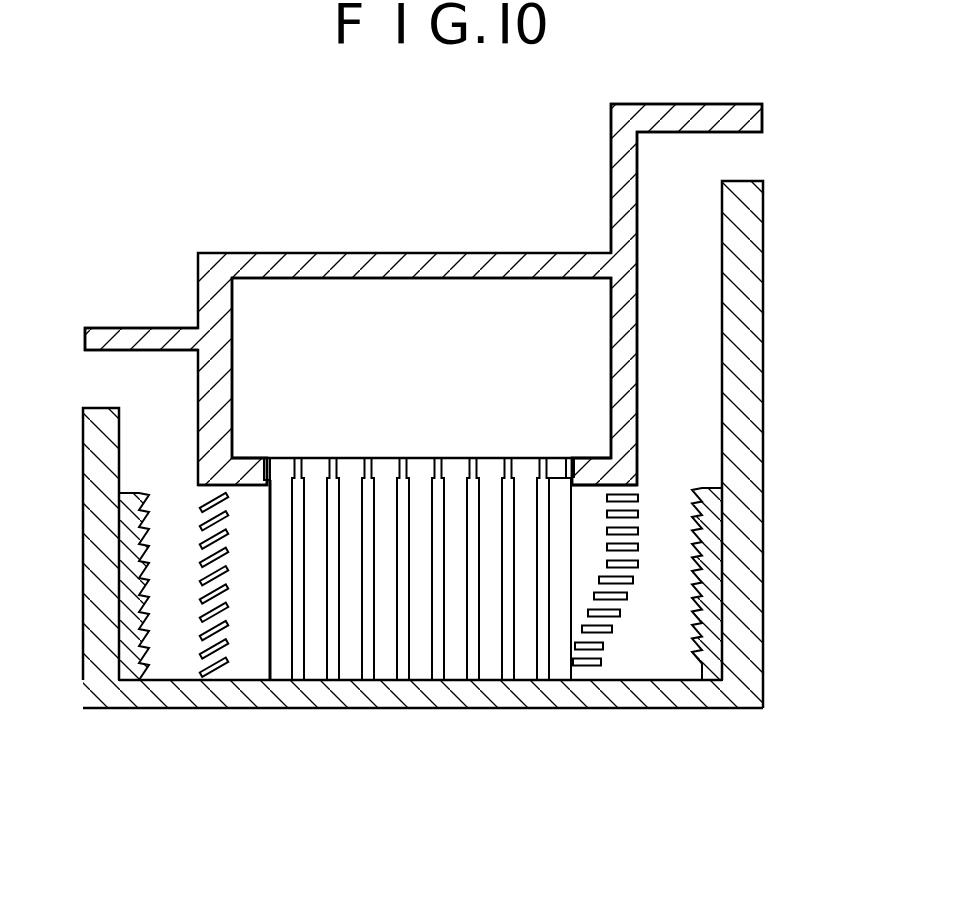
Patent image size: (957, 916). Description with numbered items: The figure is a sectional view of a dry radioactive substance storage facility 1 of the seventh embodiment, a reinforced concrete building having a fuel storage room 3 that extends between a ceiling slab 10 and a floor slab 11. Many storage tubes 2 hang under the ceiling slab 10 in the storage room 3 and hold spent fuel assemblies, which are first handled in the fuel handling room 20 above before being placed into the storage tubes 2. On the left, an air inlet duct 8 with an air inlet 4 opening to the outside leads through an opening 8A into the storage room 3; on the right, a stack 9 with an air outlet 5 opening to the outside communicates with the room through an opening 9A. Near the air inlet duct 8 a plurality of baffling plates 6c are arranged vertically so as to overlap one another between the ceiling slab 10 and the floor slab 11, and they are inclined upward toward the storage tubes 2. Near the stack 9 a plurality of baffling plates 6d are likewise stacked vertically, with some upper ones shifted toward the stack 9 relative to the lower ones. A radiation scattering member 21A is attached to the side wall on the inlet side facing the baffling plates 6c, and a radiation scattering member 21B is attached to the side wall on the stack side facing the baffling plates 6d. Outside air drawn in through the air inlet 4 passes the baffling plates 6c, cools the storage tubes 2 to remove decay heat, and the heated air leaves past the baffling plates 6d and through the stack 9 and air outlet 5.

The dry radioactive substance storage facility 1 is at (312, 262).
The storage tubes 2 is at (376, 505).
The fuel storage room 3 is at (248, 508).
The air inlet 4 is at (98, 373).
The air outlet 5 is at (742, 155).
The baffling plates 6c is at (229, 662).
The baffling plates 6d is at (595, 668).
The air inlet duct 8 is at (140, 447).
The opening 8A is at (168, 493).
The stack 9 is at (706, 375).
The opening 9A is at (668, 487).
The ceiling slab 10 is at (587, 467).
The floor slab 11 is at (413, 690).
The fuel handling room 20 is at (432, 315).
The radiation scattering member 21A is at (130, 663).
The radiation scattering member 21B is at (718, 658).